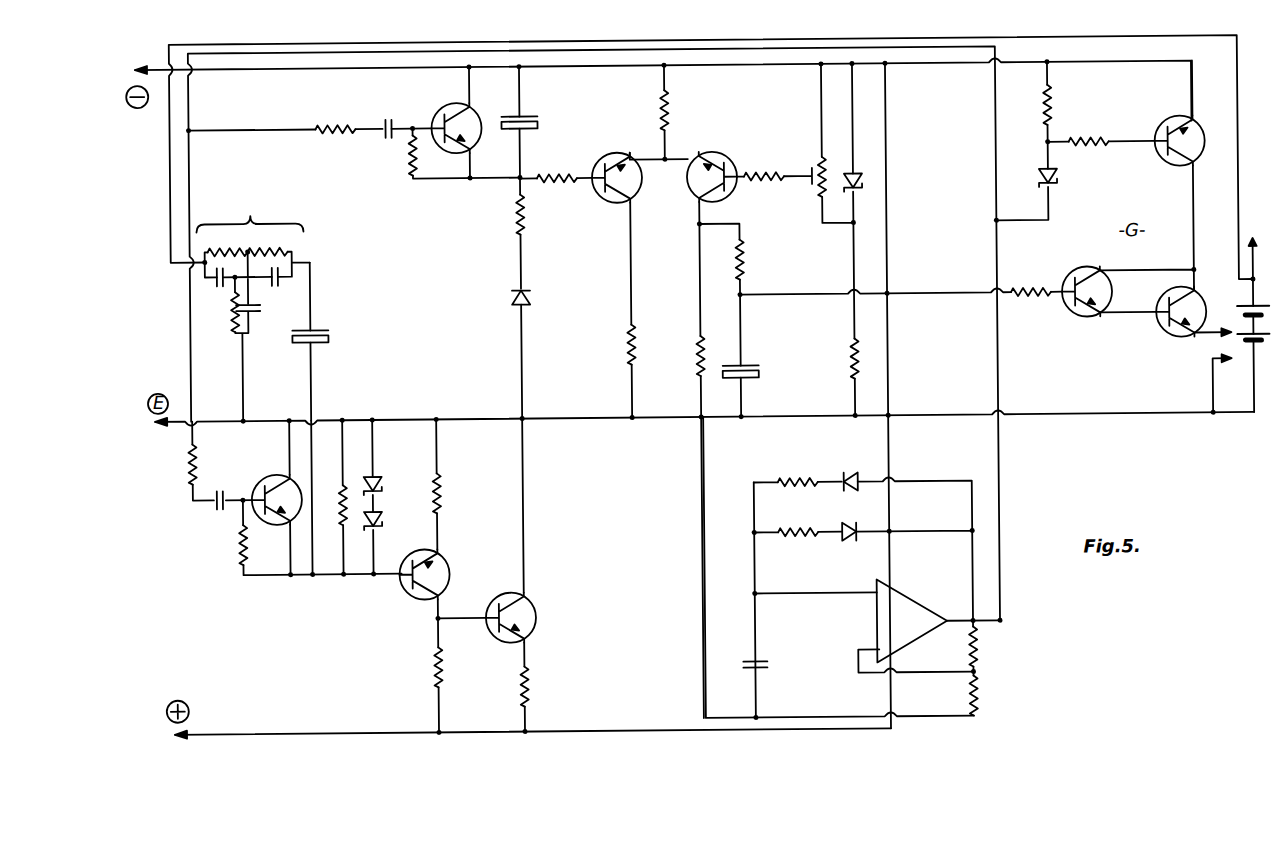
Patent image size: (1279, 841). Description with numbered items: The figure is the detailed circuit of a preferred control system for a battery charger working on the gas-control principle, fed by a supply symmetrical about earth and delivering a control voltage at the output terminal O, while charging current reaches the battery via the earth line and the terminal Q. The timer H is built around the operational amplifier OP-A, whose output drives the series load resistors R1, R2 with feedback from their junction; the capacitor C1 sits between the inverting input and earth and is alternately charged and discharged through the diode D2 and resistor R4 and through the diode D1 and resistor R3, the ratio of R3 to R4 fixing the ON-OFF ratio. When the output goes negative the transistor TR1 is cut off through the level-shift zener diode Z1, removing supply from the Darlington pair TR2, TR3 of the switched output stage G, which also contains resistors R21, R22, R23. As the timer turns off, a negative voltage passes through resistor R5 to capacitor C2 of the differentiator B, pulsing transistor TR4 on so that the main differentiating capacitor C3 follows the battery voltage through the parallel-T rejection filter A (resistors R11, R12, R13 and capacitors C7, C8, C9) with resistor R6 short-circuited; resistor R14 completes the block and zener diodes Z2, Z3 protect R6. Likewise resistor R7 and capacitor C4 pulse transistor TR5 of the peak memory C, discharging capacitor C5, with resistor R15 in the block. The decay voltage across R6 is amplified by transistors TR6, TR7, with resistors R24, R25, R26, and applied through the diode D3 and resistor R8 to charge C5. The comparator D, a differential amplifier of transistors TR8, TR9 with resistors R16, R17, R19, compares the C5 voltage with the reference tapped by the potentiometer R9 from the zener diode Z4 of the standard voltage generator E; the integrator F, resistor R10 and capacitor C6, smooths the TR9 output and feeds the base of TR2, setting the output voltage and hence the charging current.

The resistor R1 is at (980, 698).
The resistor R2 is at (980, 650).
The resistor R3 is at (798, 522).
The resistor R4 is at (798, 472).
The resistor R5 is at (206, 460).
The resistor R6 is at (342, 520).
The resistor R7 is at (285, 119).
The resistor R8 is at (501, 242).
The potentiometer R9 is at (785, 171).
The resistor R10 is at (746, 294).
The resistor R11 is at (225, 242).
The resistor R12 is at (271, 242).
The resistor R13 is at (236, 320).
The resistor R14 is at (238, 548).
The resistor R15 is at (409, 155).
The resistor R16 is at (628, 342).
The resistor R17 is at (699, 356).
The resistor R19 is at (562, 186).
The resistor R21 is at (1054, 108).
The resistor R22 is at (1102, 143).
The resistor R23 is at (1034, 302).
The resistor R24 is at (445, 493).
The resistor R25 is at (433, 666).
The resistor R26 is at (531, 688).
The capacitor C1 is at (772, 665).
The capacitor C2 is at (228, 517).
The capacitor C3 is at (329, 341).
The capacitor C4 is at (403, 119).
The capacitor C5 is at (534, 130).
The capacitor C6 is at (758, 389).
The capacitor C7 is at (222, 282).
The capacitor C8 is at (277, 283).
The capacitor C9 is at (258, 310).
The transistor TR1 is at (1170, 170).
The transistor TR2 is at (1109, 280).
The transistor TR3 is at (1160, 325).
The transistor TR4 is at (272, 473).
The transistor TR5 is at (449, 131).
The transistor TR6 is at (447, 584).
The transistor TR7 is at (536, 629).
The transistor TR8 is at (617, 228).
The transistor TR9 is at (716, 233).
The diode D1 is at (863, 541).
The diode D2 is at (864, 470).
The diode D3 is at (542, 439).
The zener diode Z1 is at (1063, 175).
The zener diode Z2 is at (384, 521).
The zener diode Z3 is at (382, 480).
The zener diode Z4 is at (866, 181).
The operational amplifier OP-A is at (912, 621).
The filter A is at (253, 307).
The differentiator B is at (320, 520).
The peak memory C is at (485, 75).
The comparator D is at (658, 137).
The standard voltage generator E is at (1023, 228).
The integrator F is at (875, 305).
The switched output stage G is at (1070, 213).
The timer H is at (852, 566).
The terminal Q is at (1251, 247).
The output terminal O is at (1212, 320).